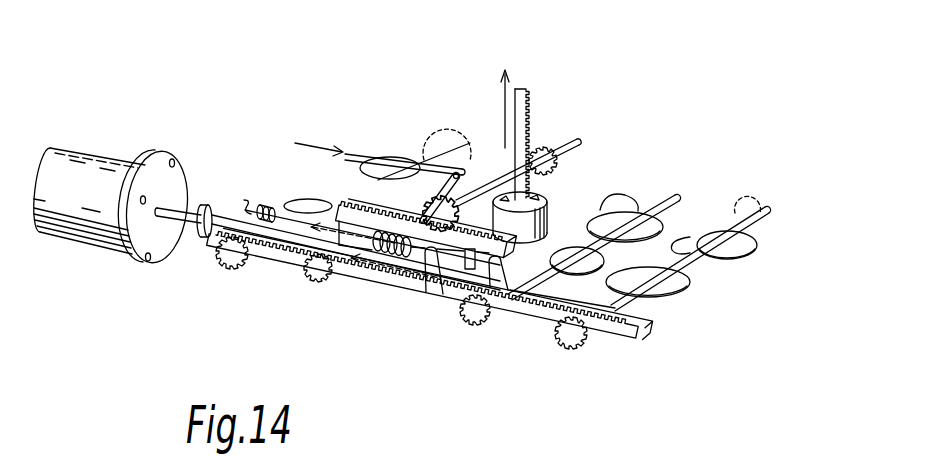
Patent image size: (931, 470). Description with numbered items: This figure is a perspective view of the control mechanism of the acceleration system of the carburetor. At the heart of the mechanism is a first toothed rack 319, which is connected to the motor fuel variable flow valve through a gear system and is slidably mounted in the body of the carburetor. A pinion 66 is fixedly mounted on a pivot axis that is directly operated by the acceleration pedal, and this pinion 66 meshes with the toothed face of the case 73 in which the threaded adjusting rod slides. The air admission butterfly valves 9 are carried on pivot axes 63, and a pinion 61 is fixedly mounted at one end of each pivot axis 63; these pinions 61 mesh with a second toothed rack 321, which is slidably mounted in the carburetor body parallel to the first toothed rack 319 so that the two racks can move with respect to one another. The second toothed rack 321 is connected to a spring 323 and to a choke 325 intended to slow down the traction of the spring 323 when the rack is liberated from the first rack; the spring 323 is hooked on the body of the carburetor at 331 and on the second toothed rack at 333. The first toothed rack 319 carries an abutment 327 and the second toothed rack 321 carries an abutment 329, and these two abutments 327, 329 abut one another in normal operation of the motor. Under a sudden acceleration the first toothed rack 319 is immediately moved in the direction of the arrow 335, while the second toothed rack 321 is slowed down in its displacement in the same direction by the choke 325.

The choke 325 is at (83, 173).
The spring hook point 331 is at (243, 200).
The air admission butterfly valve 9 is at (320, 197).
The arrow 335 is at (394, 238).
The pivot axis 63 is at (428, 150).
The first toothed rack 319 is at (454, 238).
The case 73 is at (528, 97).
The pinion 66 is at (549, 149).
The abutment 329 is at (553, 255).
The pinion 61 is at (309, 280).
The spring 323 is at (395, 264).
The spring hook point 333 is at (427, 275).
The abutment 327 is at (446, 296).
The second toothed rack 321 is at (547, 320).